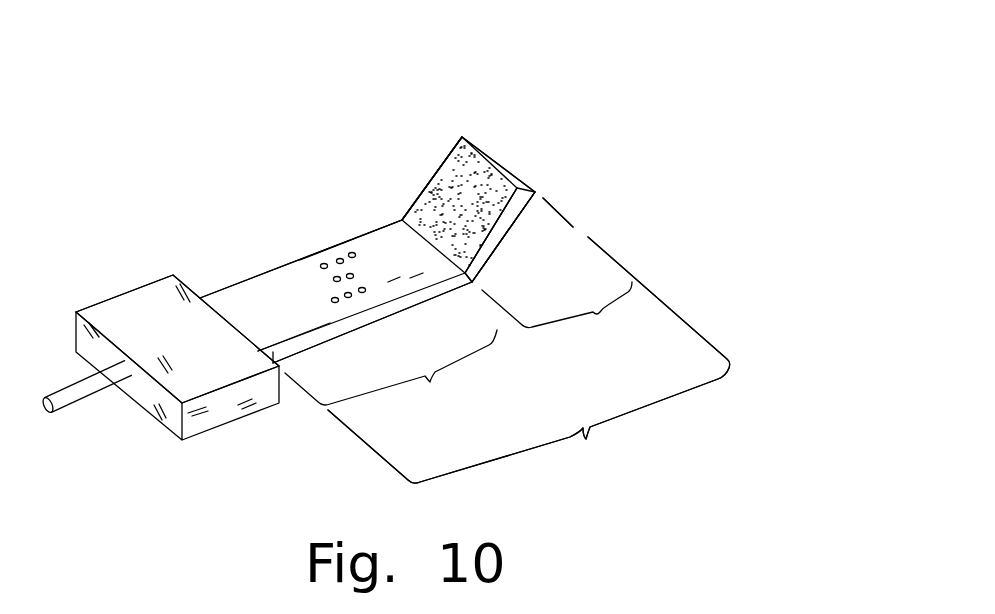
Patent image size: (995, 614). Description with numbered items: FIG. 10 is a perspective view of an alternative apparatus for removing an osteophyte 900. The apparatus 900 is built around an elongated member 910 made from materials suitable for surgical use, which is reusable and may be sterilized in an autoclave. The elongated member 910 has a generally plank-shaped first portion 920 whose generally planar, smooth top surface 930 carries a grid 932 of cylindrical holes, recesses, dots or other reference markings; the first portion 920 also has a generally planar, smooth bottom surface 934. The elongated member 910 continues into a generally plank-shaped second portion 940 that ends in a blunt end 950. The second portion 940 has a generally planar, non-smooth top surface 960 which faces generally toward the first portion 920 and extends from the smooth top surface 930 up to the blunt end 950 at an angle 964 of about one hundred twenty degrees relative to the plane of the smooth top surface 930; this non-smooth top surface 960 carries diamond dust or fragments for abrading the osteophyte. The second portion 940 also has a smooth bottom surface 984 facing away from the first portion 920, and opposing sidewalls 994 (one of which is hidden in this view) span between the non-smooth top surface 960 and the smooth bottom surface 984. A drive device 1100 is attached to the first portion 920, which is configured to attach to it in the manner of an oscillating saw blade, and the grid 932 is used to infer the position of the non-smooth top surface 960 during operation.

The apparatus for removing an osteophyte 900 is at (208, 98).
The elongated member 910 is at (529, 340).
The first portion 920 is at (377, 368).
The smooth top surface 930 is at (295, 316).
The grid 932 is at (315, 247).
The smooth bottom surface 934 is at (353, 328).
The second portion 940 is at (528, 245).
The blunt end 950 is at (575, 138).
The non-smooth top surface 960 is at (475, 165).
The angle 964 is at (450, 155).
The smooth bottom surface 984 is at (528, 235).
The opposing sidewalls 994 is at (515, 213).
The drive device 1100 is at (143, 285).